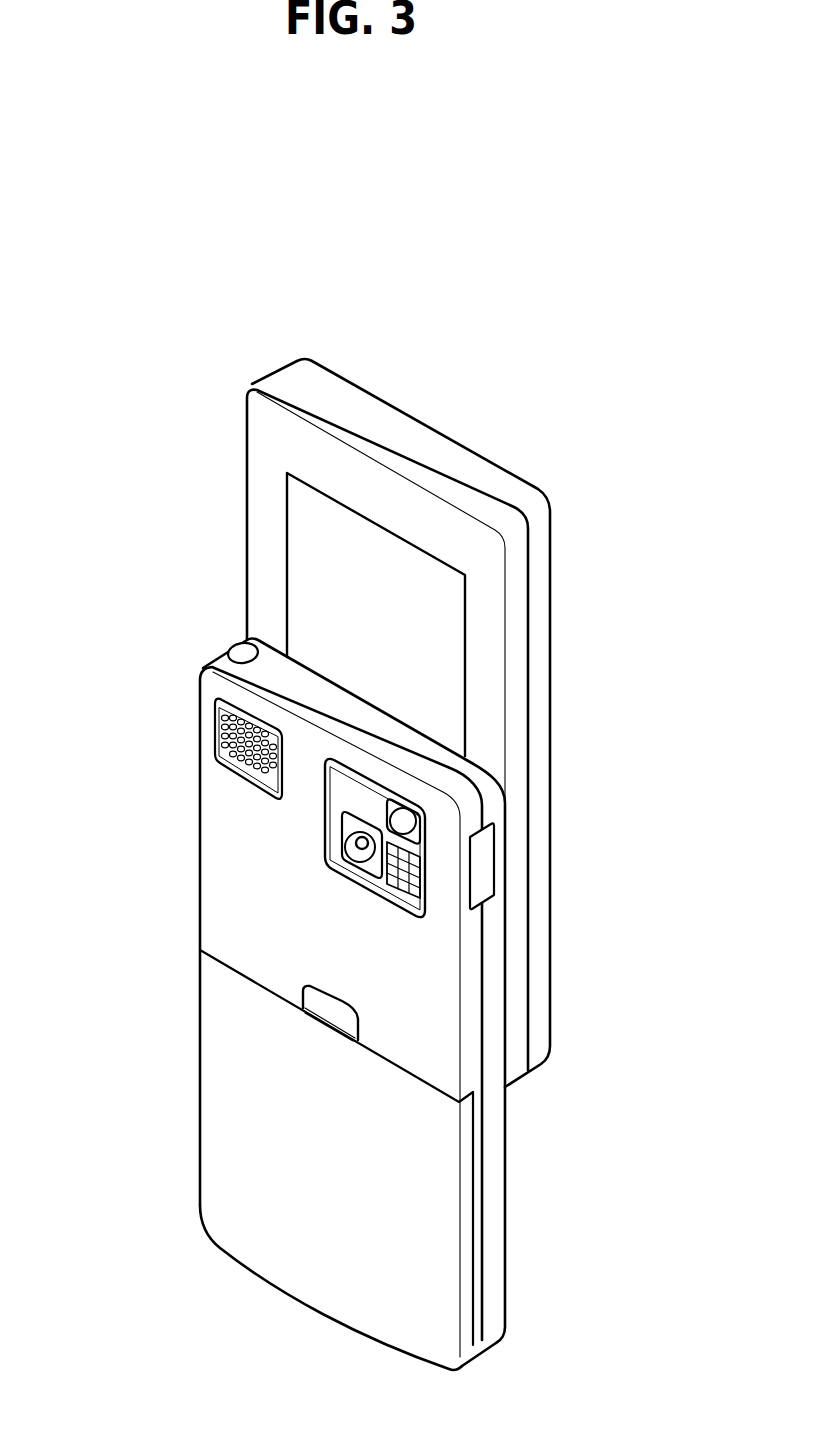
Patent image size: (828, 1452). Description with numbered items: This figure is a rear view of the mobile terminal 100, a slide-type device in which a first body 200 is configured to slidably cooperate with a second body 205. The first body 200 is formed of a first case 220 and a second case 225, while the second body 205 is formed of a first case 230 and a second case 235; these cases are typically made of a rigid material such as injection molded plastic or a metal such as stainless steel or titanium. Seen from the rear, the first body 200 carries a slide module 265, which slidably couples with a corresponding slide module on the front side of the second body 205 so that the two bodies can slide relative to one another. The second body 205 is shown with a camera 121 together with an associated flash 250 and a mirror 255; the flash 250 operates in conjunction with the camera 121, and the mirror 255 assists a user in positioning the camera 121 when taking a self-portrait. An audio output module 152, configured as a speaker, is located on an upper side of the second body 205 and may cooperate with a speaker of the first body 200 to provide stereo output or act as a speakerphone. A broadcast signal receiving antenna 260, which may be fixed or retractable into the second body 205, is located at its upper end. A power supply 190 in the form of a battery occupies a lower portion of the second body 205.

The mobile terminal 100 is at (556, 379).
The first body 200 is at (213, 515).
The second body 205 is at (196, 856).
The first case 220 is at (291, 368).
The second case 225 is at (276, 385).
The slide module 265 is at (296, 596).
The first case 230 is at (497, 1117).
The second case 235 is at (470, 1053).
The power supply 190 is at (212, 1089).
The broadcast signal receiving antenna 260 is at (237, 652).
The audio output module 152 is at (223, 742).
The flash 250 is at (420, 895).
The camera 121 is at (362, 845).
The mirror 255 is at (403, 822).